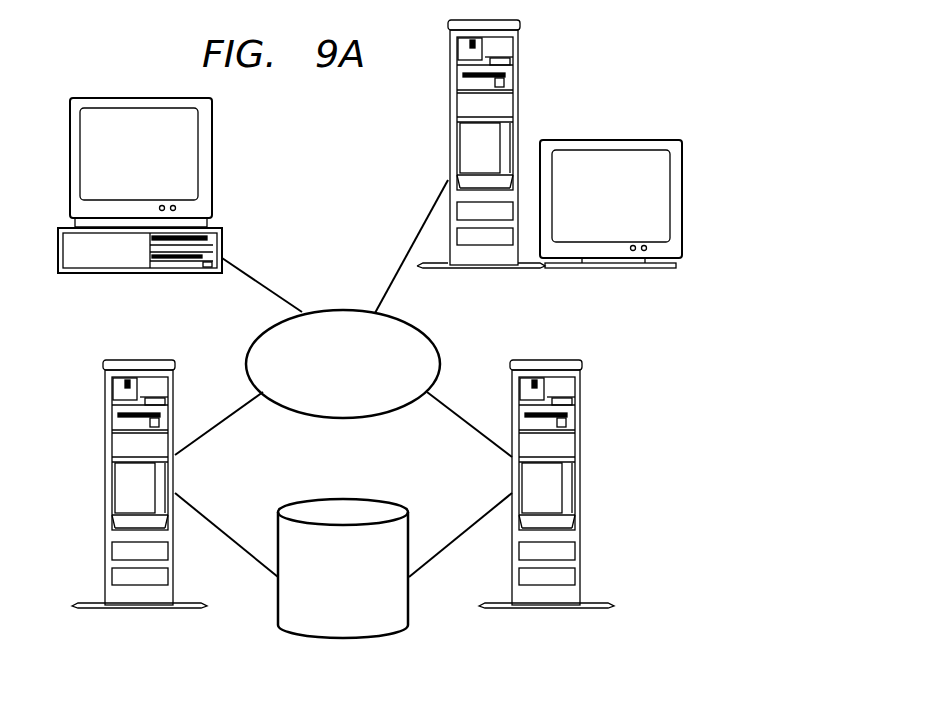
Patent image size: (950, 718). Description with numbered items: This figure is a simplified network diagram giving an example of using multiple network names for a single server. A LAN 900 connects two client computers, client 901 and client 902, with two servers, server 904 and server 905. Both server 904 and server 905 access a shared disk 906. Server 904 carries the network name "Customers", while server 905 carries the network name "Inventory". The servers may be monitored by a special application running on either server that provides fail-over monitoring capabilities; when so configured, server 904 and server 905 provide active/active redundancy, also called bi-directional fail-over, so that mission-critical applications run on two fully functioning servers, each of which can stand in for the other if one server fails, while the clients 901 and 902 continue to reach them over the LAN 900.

The LAN 900 is at (342, 310).
The client 901 is at (160, 168).
The client 902 is at (448, 133).
The server 904 is at (103, 492).
The server 905 is at (582, 492).
The shared disk 906 is at (363, 618).